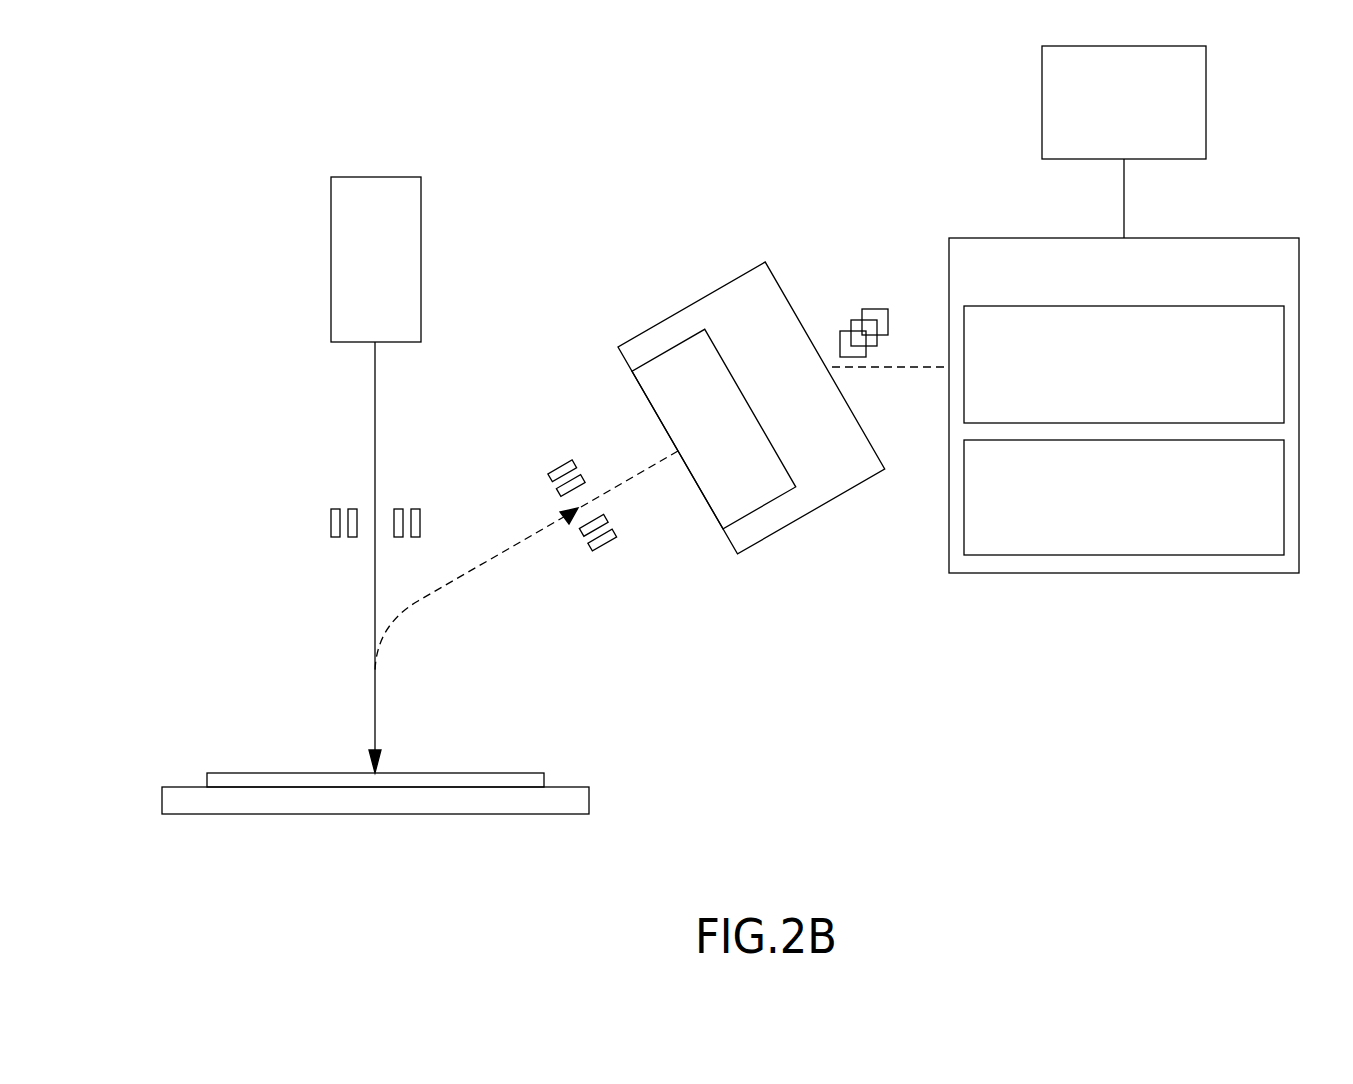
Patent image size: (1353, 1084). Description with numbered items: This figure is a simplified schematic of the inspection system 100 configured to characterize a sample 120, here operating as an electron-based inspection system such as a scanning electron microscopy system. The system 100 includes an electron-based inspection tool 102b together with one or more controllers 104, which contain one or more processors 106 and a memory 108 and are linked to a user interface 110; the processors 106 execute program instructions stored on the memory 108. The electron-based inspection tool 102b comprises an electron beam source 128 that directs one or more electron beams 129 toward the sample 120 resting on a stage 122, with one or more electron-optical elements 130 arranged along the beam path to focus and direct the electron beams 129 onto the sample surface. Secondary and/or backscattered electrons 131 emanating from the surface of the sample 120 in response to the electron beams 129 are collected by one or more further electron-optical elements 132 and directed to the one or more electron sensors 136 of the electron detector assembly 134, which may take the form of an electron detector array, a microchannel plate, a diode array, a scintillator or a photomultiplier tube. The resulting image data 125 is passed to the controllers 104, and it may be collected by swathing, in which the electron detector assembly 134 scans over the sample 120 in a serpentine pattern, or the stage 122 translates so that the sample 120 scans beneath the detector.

The inspection system 100 is at (262, 125).
The electron-based inspection tool 102b is at (200, 372).
The controller 104 is at (993, 267).
The processor 106 is at (1012, 334).
The memory 108 is at (1012, 469).
The user interface 110 is at (1086, 74).
The sample 120 is at (545, 783).
The stage 122 is at (590, 800).
The image data 125 is at (835, 320).
The electron beam source 128 is at (357, 270).
The electron beam 129 is at (375, 405).
The electron-optical elements 130 is at (332, 520).
The secondary and/or backscattered electrons 131 is at (425, 597).
The electron-optical elements 132 is at (605, 547).
The electron detector assembly 134 is at (751, 408).
The electron sensor 136 is at (714, 429).